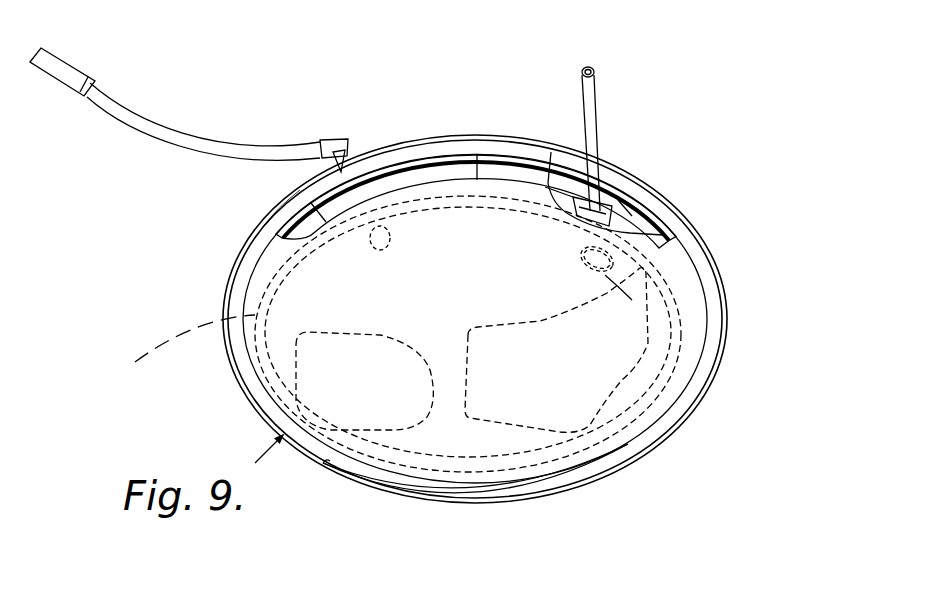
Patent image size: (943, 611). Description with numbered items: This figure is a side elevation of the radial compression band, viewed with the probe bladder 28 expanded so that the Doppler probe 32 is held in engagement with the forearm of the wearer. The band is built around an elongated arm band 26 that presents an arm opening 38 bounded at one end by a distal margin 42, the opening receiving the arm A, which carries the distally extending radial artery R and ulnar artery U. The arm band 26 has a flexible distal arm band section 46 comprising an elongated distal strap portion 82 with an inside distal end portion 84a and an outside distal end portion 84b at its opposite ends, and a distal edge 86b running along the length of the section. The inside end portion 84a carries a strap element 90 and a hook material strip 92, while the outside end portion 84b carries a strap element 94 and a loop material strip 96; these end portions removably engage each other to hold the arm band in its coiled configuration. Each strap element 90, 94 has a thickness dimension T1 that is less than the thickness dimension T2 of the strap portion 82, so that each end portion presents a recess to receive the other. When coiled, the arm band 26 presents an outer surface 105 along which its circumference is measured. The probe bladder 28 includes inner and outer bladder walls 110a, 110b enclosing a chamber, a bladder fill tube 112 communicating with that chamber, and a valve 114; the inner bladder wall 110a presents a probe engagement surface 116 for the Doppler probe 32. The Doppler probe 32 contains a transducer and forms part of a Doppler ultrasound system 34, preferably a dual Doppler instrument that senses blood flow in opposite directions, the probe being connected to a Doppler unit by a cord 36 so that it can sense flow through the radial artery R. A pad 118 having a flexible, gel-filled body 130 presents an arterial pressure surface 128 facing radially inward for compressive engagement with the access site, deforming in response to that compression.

The arm band 26 is at (310, 460).
The probe bladder 28 is at (495, 160).
The Doppler probe 32 is at (615, 207).
The Doppler ultrasound system 34 is at (594, 81).
The cord 36 is at (592, 103).
The arm opening 38 is at (256, 265).
The distal margin 42 is at (267, 238).
The distal arm band section 46 is at (245, 380).
The distal strap portion 82 is at (717, 358).
The inside distal end portion 84a is at (460, 487).
The outside distal end portion 84b is at (522, 498).
The distal edge 86b is at (703, 250).
The strap element 90 is at (412, 480).
The hook material strip 92 is at (378, 483).
The strap element 94 is at (453, 502).
The loop material strip 96 is at (423, 495).
The outer surface 105 is at (678, 207).
The inner bladder wall 110a is at (422, 178).
The outer bladder wall 110b is at (392, 167).
The bladder fill tube 112 is at (177, 133).
The valve 114 is at (70, 70).
The probe engagement surface 116 is at (485, 182).
The pad 118 is at (557, 193).
The arterial pressure surface 128 is at (562, 211).
The flexible body 130 is at (569, 214).
The arm A is at (194, 389).
The radial artery R is at (640, 305).
The ulnar artery U is at (376, 250).
The thickness dimension T1 is at (599, 513).
The thickness dimension T2 is at (302, 424).